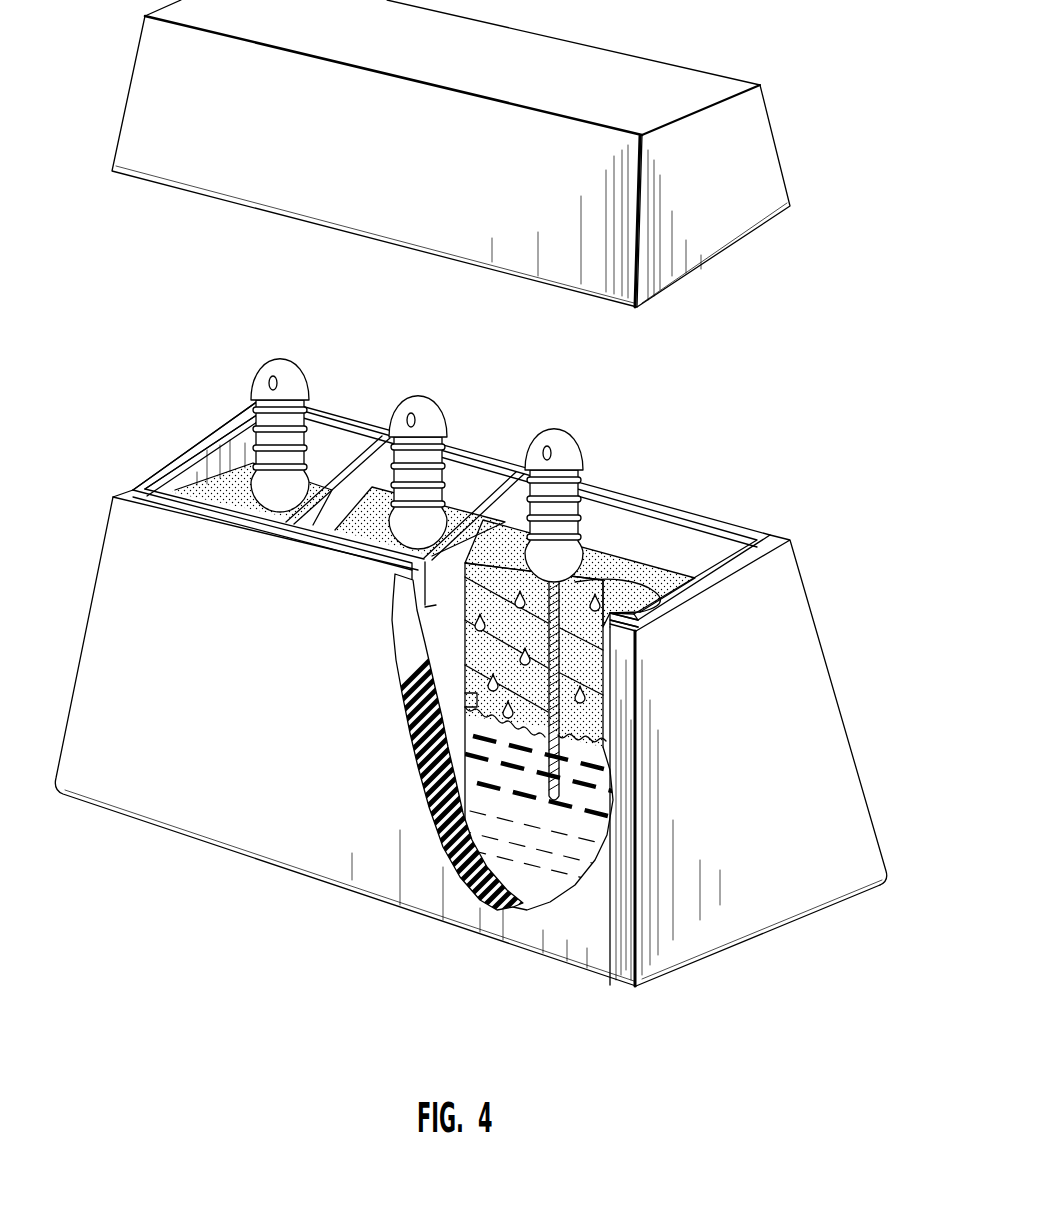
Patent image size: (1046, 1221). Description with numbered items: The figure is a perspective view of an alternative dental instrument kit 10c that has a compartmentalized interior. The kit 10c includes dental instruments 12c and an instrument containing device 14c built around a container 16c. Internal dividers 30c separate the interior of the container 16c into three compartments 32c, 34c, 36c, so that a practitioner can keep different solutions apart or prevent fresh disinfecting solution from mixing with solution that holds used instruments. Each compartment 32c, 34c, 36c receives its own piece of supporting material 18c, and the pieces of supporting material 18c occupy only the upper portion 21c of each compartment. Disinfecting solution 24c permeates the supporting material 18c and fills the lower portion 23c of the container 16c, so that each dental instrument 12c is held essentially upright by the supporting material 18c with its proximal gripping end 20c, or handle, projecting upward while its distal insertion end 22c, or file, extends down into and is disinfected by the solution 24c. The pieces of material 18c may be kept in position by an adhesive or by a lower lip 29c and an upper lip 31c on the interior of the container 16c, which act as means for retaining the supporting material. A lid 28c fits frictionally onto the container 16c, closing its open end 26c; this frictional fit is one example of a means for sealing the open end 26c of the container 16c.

The instrument kit 10c is at (205, 418).
The planter assembly 12c is at (583, 432).
The container side wall 14c is at (810, 574).
The container 16c is at (820, 780).
The supporting material 18c is at (633, 612).
The watering plug 20c is at (568, 457).
The soil 21c is at (583, 659).
The screw wick 22c is at (553, 686).
The water reservoir 23c is at (582, 856).
The solution 24c is at (553, 686).
The open end 26c is at (168, 458).
The lid 28c is at (728, 236).
The lip 29c is at (465, 699).
The liner wall 30c is at (436, 606).
The lip 31c is at (512, 555).
The compartment 32c is at (223, 499).
The compartment 34c is at (368, 524).
The compartment 36c is at (657, 578).